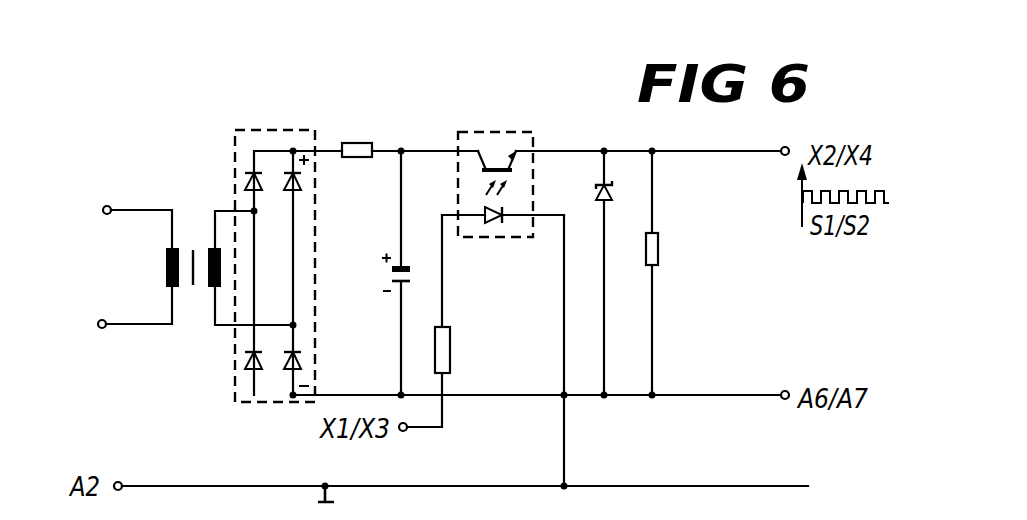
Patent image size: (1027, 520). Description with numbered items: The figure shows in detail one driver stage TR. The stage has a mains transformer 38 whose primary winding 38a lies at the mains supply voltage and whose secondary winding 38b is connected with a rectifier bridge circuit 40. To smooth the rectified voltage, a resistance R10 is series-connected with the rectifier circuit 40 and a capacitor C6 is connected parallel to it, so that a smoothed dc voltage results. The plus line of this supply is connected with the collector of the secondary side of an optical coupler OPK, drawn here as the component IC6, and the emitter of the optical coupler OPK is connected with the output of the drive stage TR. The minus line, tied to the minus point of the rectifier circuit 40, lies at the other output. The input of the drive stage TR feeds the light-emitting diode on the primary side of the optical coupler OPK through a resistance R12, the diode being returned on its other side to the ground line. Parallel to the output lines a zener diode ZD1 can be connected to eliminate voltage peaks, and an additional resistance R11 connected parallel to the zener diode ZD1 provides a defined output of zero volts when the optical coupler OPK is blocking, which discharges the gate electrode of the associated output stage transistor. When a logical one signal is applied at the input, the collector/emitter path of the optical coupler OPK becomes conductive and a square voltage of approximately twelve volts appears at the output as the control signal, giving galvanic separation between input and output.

The driver stage TR is at (160, 104).
The mains transformer 38 is at (186, 233).
The primary winding 38a is at (166, 258).
The secondary winding 38b is at (212, 247).
The rectifier bridge circuit 40 is at (233, 153).
The resistance R10 is at (409, 135).
The capacitor C6 is at (374, 273).
The optocoupler IC6 is at (486, 161).
The optical coupler OPK is at (490, 138).
The resistance R12 is at (450, 321).
The zener diode ZD1 is at (578, 273).
The additional resistance R11 is at (634, 273).